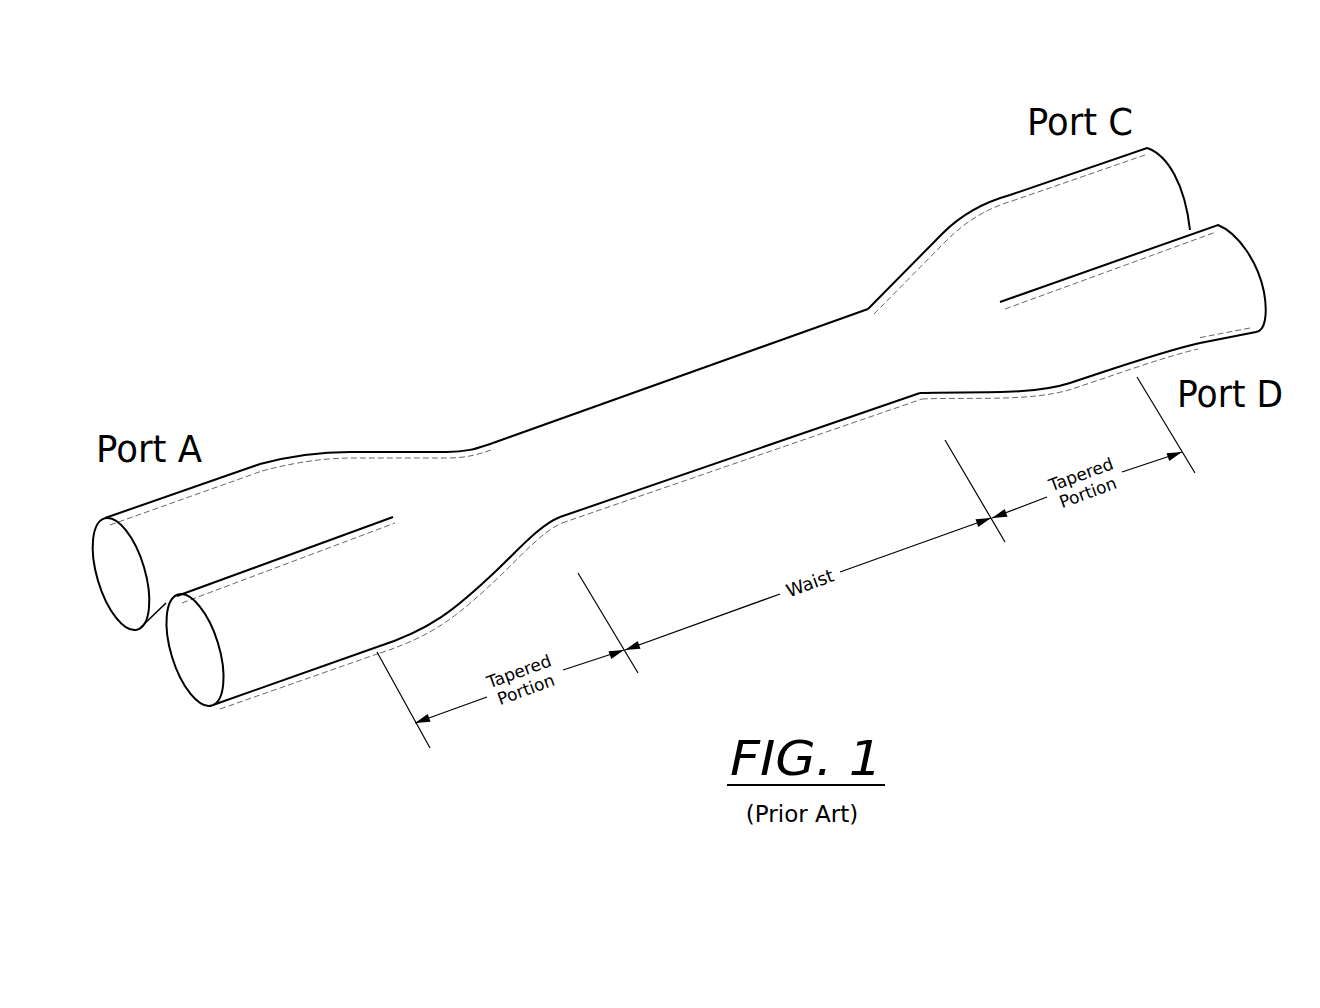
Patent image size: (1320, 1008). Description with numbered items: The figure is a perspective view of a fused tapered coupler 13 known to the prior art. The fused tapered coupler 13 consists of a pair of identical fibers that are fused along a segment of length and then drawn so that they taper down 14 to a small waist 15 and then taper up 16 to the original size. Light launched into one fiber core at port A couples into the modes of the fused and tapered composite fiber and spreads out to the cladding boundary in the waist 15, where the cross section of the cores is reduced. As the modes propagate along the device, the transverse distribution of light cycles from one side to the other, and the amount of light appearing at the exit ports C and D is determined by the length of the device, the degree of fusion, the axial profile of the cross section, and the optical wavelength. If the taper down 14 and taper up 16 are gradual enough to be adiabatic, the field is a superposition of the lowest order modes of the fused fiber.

The fused tapered coupler 13 is at (631, 337).
The taper down 14 is at (369, 455).
The waist 15 is at (583, 410).
The taper up 16 is at (898, 277).